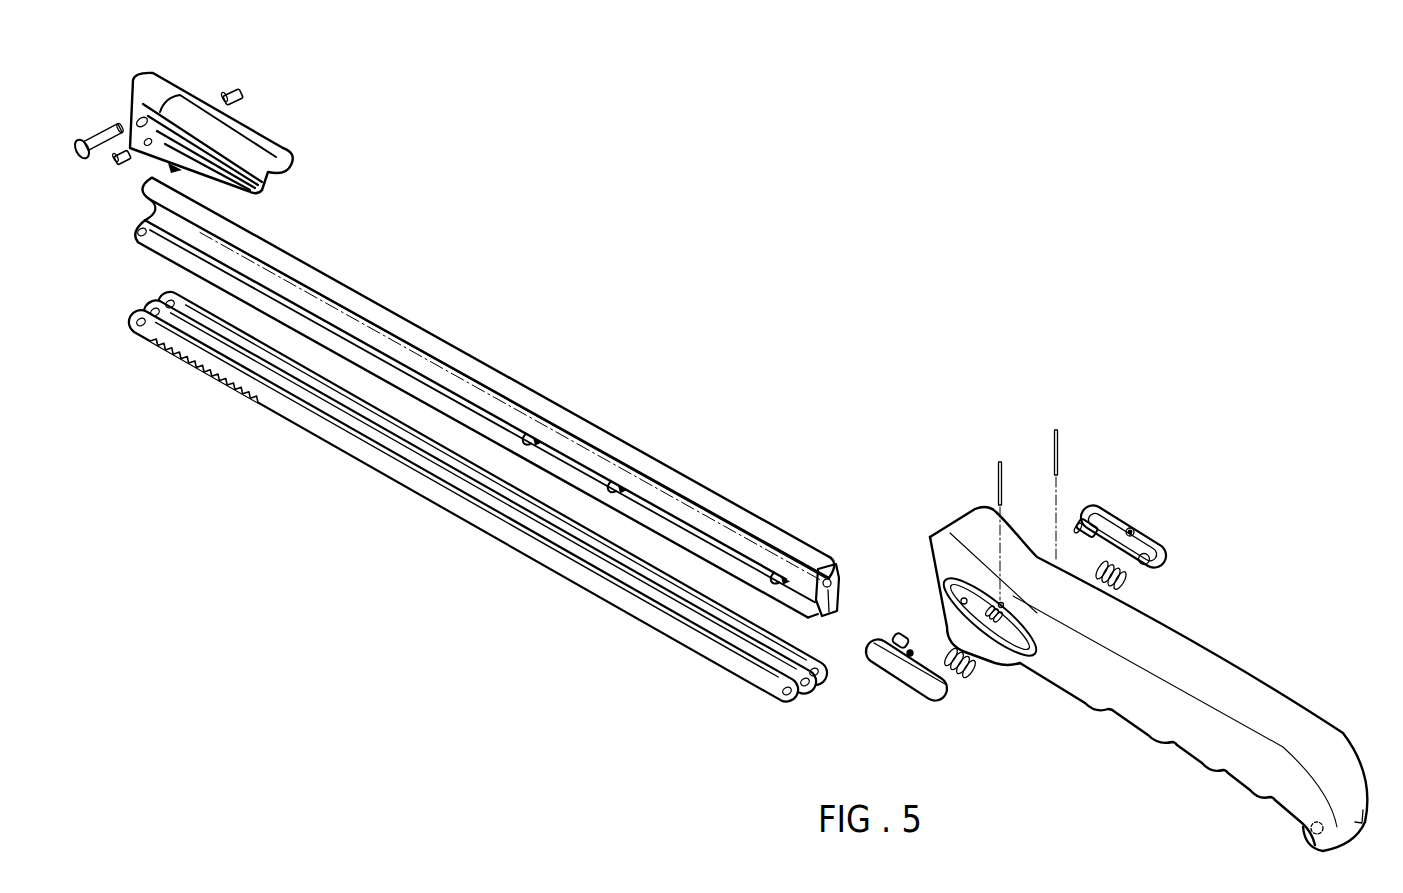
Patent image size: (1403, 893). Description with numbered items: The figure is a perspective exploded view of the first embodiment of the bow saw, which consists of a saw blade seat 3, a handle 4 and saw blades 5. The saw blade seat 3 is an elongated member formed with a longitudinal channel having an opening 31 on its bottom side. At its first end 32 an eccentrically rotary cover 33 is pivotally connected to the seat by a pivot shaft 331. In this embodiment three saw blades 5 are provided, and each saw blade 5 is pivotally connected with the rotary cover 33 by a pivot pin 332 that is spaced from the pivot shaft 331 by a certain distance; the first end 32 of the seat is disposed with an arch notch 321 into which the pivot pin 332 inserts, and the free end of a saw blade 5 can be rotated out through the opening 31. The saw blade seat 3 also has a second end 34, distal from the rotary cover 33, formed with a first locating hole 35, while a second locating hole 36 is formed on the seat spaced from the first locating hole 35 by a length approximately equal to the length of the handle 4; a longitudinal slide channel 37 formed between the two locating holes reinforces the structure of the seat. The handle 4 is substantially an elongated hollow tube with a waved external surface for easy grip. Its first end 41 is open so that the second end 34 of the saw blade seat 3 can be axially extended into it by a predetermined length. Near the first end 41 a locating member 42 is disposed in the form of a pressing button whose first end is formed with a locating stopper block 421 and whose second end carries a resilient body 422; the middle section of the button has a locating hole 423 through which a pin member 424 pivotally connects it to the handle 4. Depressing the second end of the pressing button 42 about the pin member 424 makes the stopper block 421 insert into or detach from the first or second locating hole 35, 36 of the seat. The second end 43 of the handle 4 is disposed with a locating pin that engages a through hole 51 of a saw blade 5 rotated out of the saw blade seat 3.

The saw blade seat 3 is at (567, 422).
The opening 31 is at (821, 614).
The first end 32 is at (133, 232).
The arch notch 321 is at (140, 209).
The rotary cover 33 is at (161, 85).
The pivot shaft 331 is at (243, 97).
The pivot pin 332 is at (100, 140).
The second end 34 is at (834, 565).
The first locating hole 35 is at (775, 578).
The second locating hole 36 is at (531, 440).
The longitudinal slide channel 37 is at (616, 488).
The handle 4 is at (1227, 680).
The first end 41 is at (960, 517).
The locating member 42 is at (1156, 536).
The locating stopper block 421 is at (1080, 518).
The resilient body 422 is at (1130, 586).
The locating hole 423 is at (1131, 526).
The pin member 424 is at (1052, 442).
The second end 43 is at (1363, 800).
The saw blade 5 is at (432, 493).
The through hole 51 is at (132, 326).